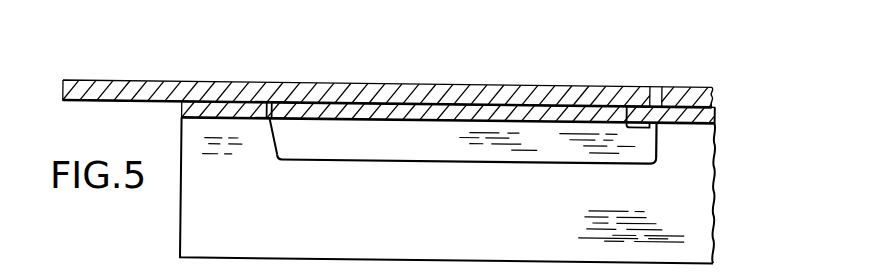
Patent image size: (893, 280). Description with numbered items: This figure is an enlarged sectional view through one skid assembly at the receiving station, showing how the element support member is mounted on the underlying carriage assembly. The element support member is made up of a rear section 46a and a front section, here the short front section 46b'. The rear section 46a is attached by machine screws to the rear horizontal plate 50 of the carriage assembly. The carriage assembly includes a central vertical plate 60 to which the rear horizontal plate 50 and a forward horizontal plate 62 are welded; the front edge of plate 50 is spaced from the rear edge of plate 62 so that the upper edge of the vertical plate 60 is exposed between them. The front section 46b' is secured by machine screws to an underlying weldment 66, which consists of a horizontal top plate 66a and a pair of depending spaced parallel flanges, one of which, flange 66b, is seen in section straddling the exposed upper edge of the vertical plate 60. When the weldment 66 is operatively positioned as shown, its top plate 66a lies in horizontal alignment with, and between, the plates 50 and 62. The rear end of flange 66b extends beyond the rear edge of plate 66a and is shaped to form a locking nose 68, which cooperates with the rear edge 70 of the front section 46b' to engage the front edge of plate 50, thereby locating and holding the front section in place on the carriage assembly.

The rear section 46a is at (695, 98).
The short front section 46b' is at (292, 79).
The rear horizontal plate 50 is at (718, 115).
The central vertical plate 60 is at (705, 197).
The forward horizontal plate 62 is at (218, 108).
The weldment 66 is at (262, 152).
The horizontal top plate 66a is at (386, 110).
The depending flange 66b is at (468, 147).
The locking nose 68 is at (660, 133).
The rear edge 70 is at (655, 107).